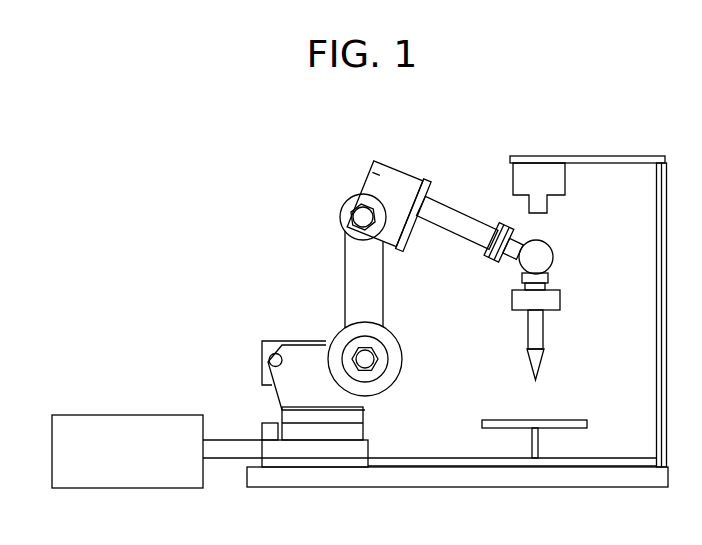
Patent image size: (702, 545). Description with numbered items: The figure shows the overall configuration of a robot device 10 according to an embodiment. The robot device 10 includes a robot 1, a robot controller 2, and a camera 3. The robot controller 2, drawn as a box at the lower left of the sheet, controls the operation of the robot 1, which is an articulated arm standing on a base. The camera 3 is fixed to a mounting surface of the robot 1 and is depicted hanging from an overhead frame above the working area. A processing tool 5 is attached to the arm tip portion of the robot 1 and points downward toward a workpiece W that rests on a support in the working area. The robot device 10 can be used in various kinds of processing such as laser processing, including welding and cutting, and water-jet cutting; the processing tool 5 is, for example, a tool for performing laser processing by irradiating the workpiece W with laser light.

The robot device 10 is at (172, 196).
The robot 1 is at (318, 231).
The robot controller 2 is at (83, 415).
The camera 3 is at (513, 177).
The processing tool 5 is at (525, 334).
The workpiece W is at (573, 419).